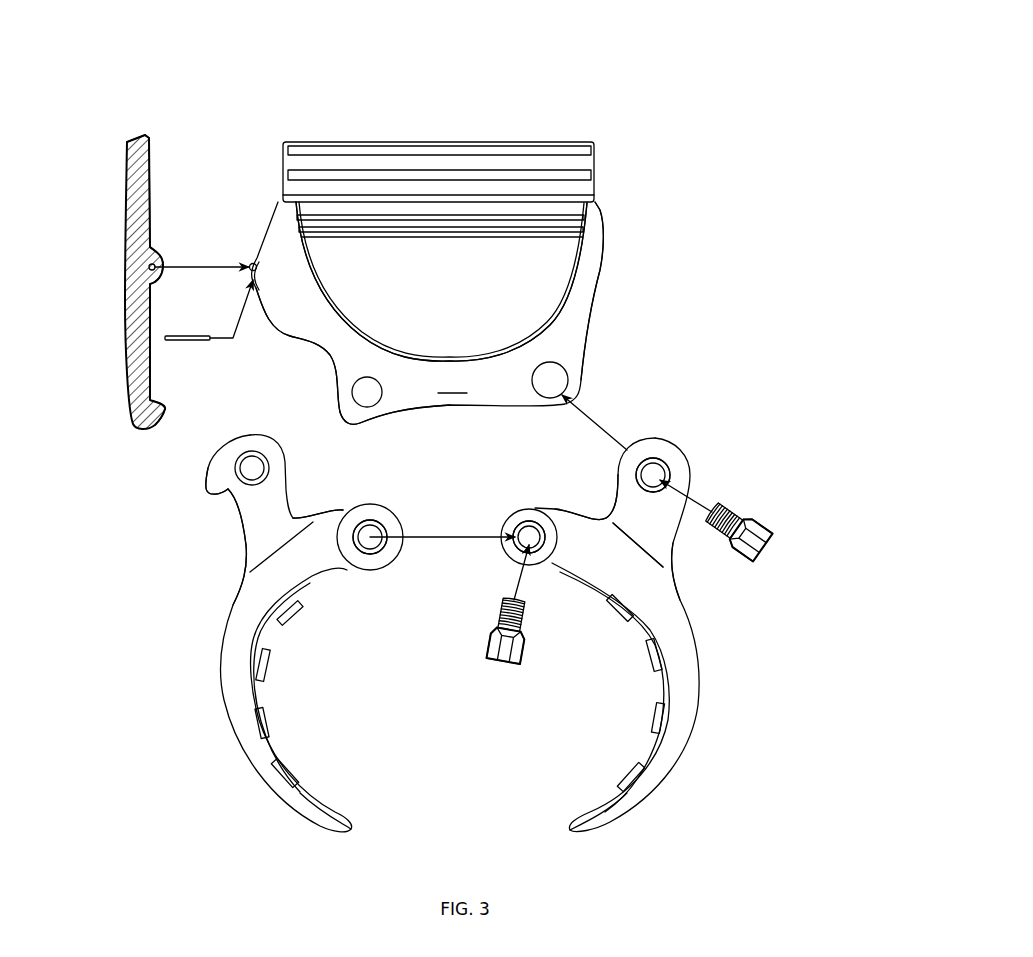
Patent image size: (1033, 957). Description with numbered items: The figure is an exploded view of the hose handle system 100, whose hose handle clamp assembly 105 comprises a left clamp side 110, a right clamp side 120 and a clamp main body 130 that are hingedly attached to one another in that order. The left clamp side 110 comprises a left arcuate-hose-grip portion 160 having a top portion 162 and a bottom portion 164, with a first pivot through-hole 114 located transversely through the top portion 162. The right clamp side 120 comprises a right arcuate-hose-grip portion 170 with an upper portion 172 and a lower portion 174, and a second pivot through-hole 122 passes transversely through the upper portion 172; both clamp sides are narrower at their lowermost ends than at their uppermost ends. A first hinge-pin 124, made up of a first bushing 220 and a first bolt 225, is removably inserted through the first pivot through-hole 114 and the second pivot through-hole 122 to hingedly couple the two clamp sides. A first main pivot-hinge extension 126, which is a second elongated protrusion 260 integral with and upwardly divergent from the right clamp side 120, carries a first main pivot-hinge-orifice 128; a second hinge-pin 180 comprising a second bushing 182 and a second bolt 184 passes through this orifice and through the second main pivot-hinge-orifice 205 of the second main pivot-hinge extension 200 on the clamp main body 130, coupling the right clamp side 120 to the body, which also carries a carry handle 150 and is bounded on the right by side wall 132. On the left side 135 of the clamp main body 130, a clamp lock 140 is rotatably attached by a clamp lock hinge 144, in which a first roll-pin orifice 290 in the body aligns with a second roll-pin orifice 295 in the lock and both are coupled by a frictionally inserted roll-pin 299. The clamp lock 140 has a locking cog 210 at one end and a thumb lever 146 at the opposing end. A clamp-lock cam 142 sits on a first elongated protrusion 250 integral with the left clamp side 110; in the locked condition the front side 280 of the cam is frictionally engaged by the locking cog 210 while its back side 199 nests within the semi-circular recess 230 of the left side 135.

The hose handle system 100 is at (612, 50).
The hose handle clamp assembly 105 is at (627, 86).
The left clamp side 110 is at (232, 674).
The first pivot through-hole 114 is at (373, 530).
The right clamp side 120 is at (696, 645).
The second pivot through-hole 122 is at (527, 527).
The first hinge-pin 124 is at (488, 652).
The first main pivot-hinge extension 126 is at (286, 462).
The first main pivot-hinge-orifice 128 is at (668, 464).
The clamp main body 130 is at (428, 313).
The body side wall 132 is at (600, 208).
The left side 135 is at (300, 272).
The clamp lock 140 is at (127, 283).
The clamp-lock cam 142 is at (206, 485).
The clamp lock hinge 144 is at (233, 134).
The thumb lever 146 is at (127, 160).
The carry handle 150 is at (432, 142).
The left arcuate-hose-grip portion 160 is at (264, 660).
The top portion 162 is at (320, 520).
The bottom portion 164 is at (276, 800).
The right arcuate-hose-grip portion 170 is at (646, 655).
The upper portion 172 is at (572, 516).
The lower portion 174 is at (640, 796).
The second hinge-pin 180 is at (757, 544).
The second bushing 182 is at (652, 460).
The second bolt 184 is at (750, 564).
The back side 199 is at (280, 448).
The second main pivot-hinge extension 200 is at (648, 537).
The second main pivot-hinge-orifice 205 is at (572, 378).
The locking cog 210 is at (178, 408).
The first bushing 220 is at (352, 540).
The first bolt 225 is at (500, 667).
The semi-circular recess 230 is at (320, 348).
The first elongated protrusion 250 is at (263, 520).
The second elongated protrusion 260 is at (632, 498).
The front side 280 is at (214, 464).
The first roll-pin orifice 290 is at (250, 264).
The second roll-pin orifice 295 is at (153, 260).
The roll-pin 299 is at (183, 340).